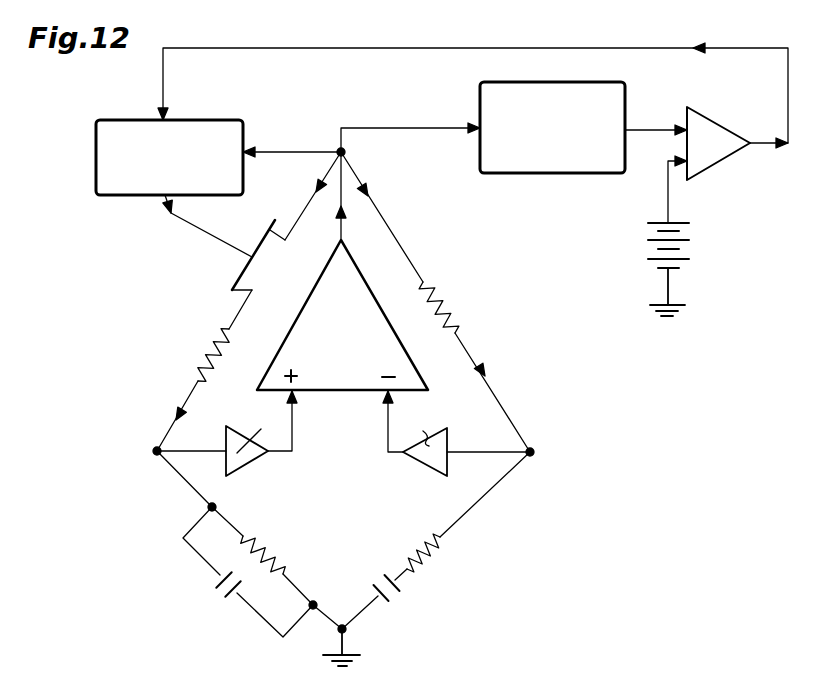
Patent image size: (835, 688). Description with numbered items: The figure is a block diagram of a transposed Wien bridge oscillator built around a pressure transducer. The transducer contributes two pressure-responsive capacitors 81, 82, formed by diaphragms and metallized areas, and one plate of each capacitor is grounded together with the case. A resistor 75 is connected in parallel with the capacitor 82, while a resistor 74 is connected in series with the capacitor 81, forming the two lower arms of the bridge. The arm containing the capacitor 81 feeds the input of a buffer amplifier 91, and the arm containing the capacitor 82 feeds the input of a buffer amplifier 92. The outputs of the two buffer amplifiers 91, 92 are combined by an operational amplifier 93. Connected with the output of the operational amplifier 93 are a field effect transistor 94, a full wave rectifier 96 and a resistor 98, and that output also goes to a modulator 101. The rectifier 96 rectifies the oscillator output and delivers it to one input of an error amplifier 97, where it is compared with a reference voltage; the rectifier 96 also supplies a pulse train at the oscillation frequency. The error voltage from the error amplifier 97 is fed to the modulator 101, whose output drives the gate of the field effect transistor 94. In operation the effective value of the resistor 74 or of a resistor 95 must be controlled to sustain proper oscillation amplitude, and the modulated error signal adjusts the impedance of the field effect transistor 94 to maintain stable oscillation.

The modulator 101 is at (204, 123).
The rectifier 96 is at (614, 96).
The error amplifier 97 is at (716, 128).
The field effect transistor 94 is at (258, 270).
The resistor 95 is at (207, 352).
The resistor 98 is at (440, 292).
The operational amplifier 93 is at (344, 346).
The buffer amplifier 92 is at (227, 433).
The buffer amplifier 91 is at (456, 433).
The resistor 75 is at (268, 548).
The resistor 74 is at (432, 533).
The pressure-responsive capacitor 82 is at (221, 600).
The pressure-responsive capacitor 81 is at (392, 604).